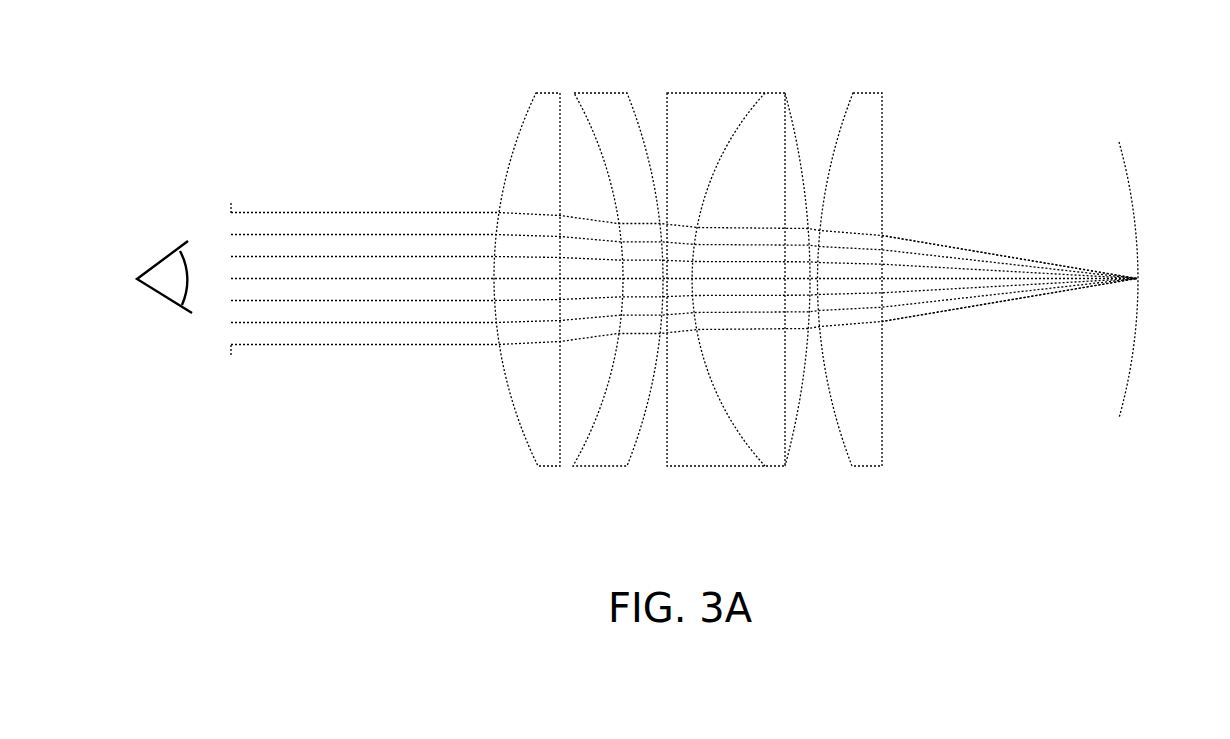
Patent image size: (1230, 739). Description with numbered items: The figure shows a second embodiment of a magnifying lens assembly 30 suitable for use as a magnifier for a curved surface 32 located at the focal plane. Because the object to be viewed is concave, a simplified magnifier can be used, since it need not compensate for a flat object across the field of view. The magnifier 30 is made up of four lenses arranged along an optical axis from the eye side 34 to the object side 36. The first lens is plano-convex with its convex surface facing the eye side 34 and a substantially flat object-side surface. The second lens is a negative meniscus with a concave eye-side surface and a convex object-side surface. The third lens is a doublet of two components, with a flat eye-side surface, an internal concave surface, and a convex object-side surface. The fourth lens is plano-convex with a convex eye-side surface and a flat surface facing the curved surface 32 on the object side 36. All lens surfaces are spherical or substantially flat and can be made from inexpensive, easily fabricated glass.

The magnifying lens assembly 30 is at (288, 105).
The curved surface 32 is at (1138, 210).
The eye side 34 is at (684, 249).
The object side 36 is at (1009, 245).